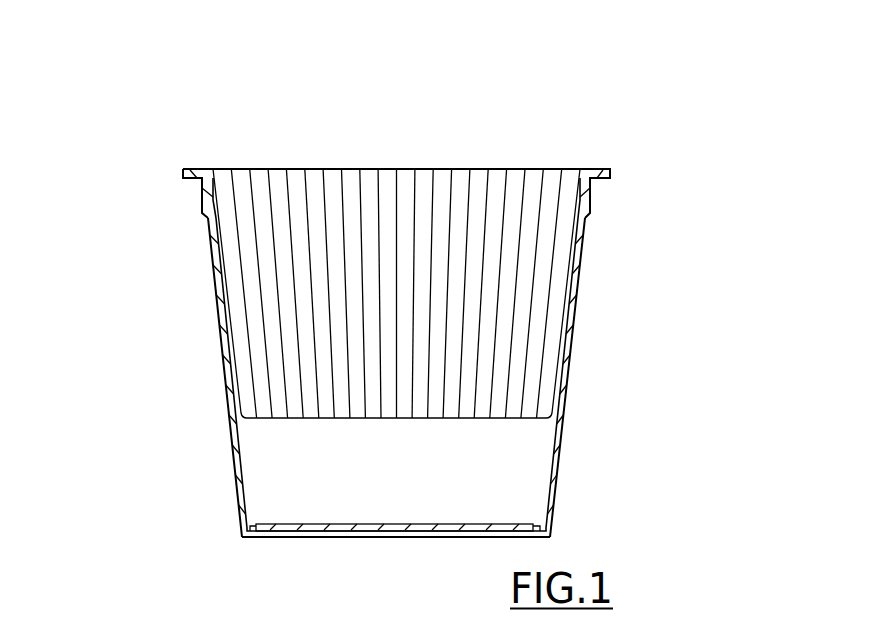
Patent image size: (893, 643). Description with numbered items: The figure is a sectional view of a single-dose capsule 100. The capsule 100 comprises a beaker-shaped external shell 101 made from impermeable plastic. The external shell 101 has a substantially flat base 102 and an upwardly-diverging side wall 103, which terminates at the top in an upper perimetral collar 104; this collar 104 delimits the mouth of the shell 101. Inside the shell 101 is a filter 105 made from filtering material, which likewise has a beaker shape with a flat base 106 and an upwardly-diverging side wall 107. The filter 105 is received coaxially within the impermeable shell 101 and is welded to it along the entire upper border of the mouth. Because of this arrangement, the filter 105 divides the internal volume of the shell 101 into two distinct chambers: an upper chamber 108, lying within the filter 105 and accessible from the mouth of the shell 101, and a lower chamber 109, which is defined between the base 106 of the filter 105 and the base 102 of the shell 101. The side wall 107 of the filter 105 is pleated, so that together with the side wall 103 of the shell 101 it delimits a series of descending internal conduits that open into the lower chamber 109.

The single-dose capsule 100 is at (408, 320).
The external shell 101 is at (489, 364).
The base 102 is at (362, 531).
The side wall 103 is at (566, 349).
The upper perimetral collar 104 is at (603, 168).
The filter 105 is at (388, 166).
The base 106 is at (340, 422).
The side wall 107 is at (253, 305).
The upper chamber 108 is at (300, 356).
The lower chamber 109 is at (414, 490).